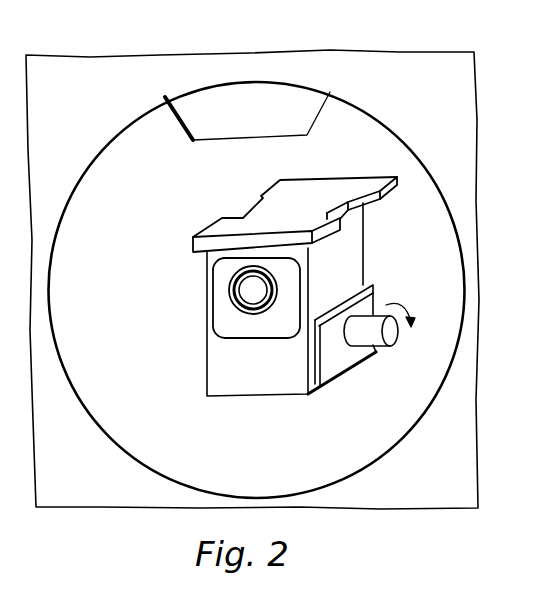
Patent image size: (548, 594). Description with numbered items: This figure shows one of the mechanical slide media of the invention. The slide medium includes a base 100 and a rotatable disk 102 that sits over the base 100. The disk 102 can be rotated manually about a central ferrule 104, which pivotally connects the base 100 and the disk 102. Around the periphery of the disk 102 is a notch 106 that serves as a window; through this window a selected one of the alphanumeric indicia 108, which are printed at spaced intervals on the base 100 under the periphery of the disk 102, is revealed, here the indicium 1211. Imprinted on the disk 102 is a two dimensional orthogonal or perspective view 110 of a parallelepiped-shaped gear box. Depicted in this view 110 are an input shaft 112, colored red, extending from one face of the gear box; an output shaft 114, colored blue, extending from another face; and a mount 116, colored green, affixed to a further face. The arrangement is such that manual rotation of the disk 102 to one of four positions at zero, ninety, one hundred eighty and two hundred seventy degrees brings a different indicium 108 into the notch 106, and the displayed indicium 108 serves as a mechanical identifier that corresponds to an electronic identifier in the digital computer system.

The base 100 is at (464, 147).
The rotatable disk 102 is at (452, 269).
The central ferrule 104 is at (233, 303).
The notch 106 is at (186, 130).
The alphanumeric indicia 108 is at (286, 98).
The two dimensional orthogonal or perspective view 110 is at (246, 386).
The input shaft 112 is at (400, 343).
The output shaft 114 is at (218, 279).
The mount 116 is at (321, 190).
The printed identification label 1211 is at (248, 116).